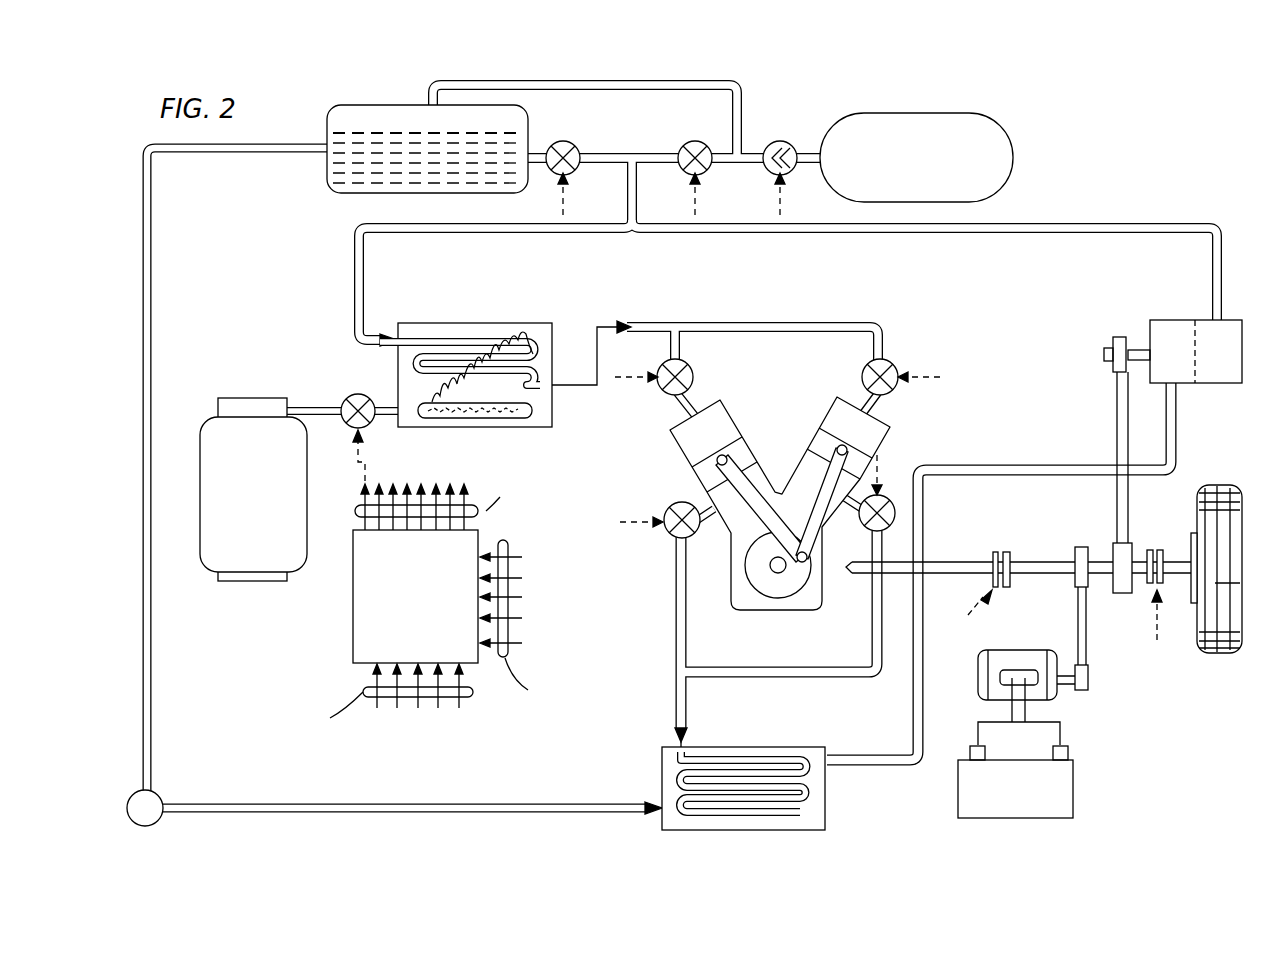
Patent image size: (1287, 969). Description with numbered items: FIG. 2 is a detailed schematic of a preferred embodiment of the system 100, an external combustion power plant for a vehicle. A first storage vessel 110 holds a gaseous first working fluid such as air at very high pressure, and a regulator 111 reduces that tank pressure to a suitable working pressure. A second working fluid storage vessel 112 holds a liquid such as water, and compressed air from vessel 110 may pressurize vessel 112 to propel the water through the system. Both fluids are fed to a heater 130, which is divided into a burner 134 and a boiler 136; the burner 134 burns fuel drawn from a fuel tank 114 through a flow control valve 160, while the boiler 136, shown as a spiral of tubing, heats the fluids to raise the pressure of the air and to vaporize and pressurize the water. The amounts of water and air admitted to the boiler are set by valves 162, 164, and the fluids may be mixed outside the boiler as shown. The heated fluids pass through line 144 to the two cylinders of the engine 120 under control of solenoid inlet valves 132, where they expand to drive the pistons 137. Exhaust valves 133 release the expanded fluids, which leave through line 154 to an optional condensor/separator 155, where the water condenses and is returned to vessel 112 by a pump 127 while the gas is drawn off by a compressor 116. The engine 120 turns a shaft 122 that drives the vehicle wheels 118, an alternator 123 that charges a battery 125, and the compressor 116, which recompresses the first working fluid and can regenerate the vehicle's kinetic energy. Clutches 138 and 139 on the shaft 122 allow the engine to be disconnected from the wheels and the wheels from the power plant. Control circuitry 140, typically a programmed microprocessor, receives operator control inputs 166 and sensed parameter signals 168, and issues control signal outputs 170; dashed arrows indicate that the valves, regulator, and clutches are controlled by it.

The system 100 is at (1140, 186).
The first storage vessel 110 is at (1000, 130).
The regulator 111 is at (792, 142).
The second working fluid storage vessel 112 is at (327, 120).
The fuel tank 114 is at (213, 424).
The compressor 116 is at (1172, 320).
The vehicle wheels 118 is at (1213, 657).
The engine 120 is at (807, 490).
The shaft 122 is at (945, 561).
The alternator 123 is at (1028, 650).
The battery 125 is at (1030, 804).
The pump 127 is at (158, 795).
The heater 130 is at (498, 377).
The inlet valves 132 is at (692, 371).
The exhaust valves 133 is at (680, 502).
The burner 134 is at (472, 412).
The boiler 136 is at (510, 340).
The pistons 137 is at (762, 425).
The clutch 138 is at (1011, 552).
The clutch 139 is at (1161, 548).
The control circuitry 140 is at (353, 633).
The line 144 is at (759, 322).
The line 154 is at (675, 706).
The condensor/separator 155 is at (776, 746).
The flow control valve 160 is at (367, 393).
The valve 162 is at (572, 142).
The valve 164 is at (697, 141).
The control inputs 166 is at (472, 700).
The parameter signals 168 is at (508, 635).
The control signal outputs 170 is at (465, 495).